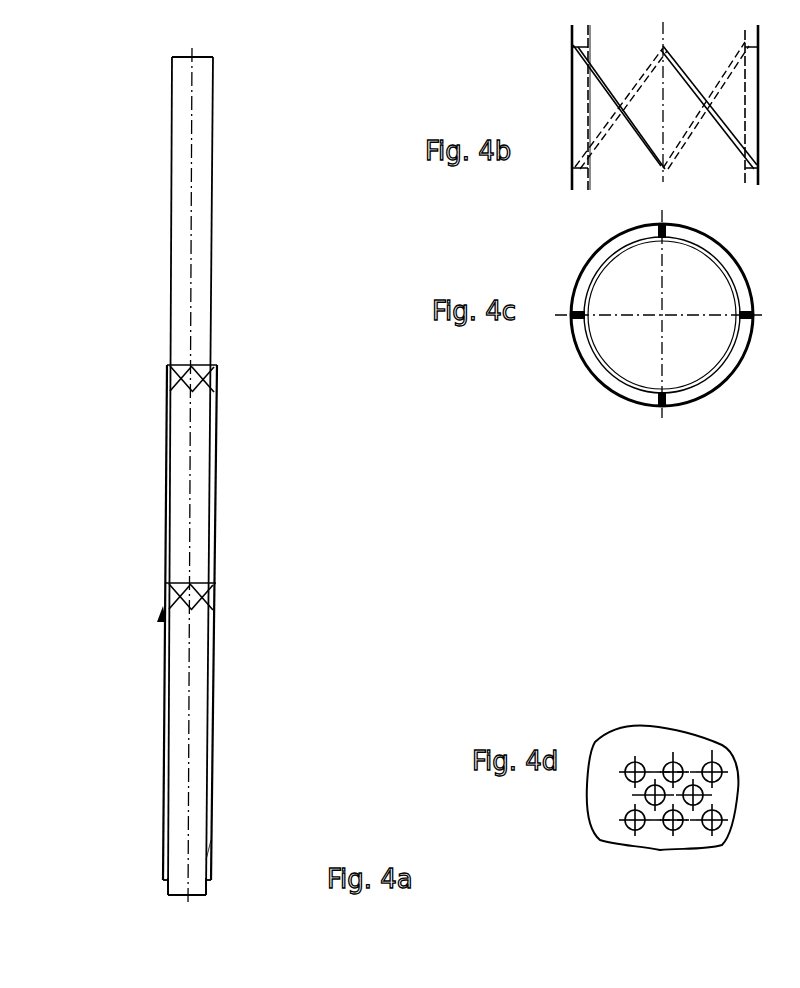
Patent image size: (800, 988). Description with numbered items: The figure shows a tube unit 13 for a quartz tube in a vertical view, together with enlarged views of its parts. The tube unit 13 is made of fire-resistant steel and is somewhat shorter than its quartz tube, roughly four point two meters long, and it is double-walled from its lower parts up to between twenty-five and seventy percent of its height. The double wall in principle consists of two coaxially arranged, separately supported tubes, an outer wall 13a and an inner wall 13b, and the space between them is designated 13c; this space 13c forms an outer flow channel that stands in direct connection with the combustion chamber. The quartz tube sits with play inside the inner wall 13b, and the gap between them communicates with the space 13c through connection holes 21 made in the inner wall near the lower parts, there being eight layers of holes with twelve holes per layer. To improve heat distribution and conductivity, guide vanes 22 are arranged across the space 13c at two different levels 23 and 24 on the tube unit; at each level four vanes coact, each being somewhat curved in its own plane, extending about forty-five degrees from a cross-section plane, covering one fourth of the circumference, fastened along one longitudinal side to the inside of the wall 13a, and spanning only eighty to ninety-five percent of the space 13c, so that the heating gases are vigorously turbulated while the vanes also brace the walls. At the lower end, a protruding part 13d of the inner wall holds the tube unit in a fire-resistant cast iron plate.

In FIG. 4a, the tube unit 13 is at (198, 484).
In FIG. 4a, the outer wall 13a is at (213, 740).
In FIG. 4b, the outer wall 13a is at (577, 65).
In FIG. 4c, the outer wall 13a is at (593, 256).
In FIG. 4a, the inner wall 13b is at (213, 296).
In FIG. 4b, the inner wall 13b is at (589, 43).
In FIG. 4c, the inner wall 13b is at (607, 265).
In FIG. 4a, the space between the double walls 13c is at (213, 690).
In FIG. 4b, the space between the double walls 13c is at (576, 44).
In FIG. 4a, the protruding part of the inner wall 13d is at (207, 888).
In FIG. 4a, the connection holes 21 is at (213, 852).
In FIG. 4d, the connection holes 21 is at (628, 826).
In FIG. 4b, the guide vanes 22 is at (628, 128).
In FIG. 4a, the first guide vane level 23 is at (133, 592).
In FIG. 4a, the second guide vane level 24 is at (128, 385).